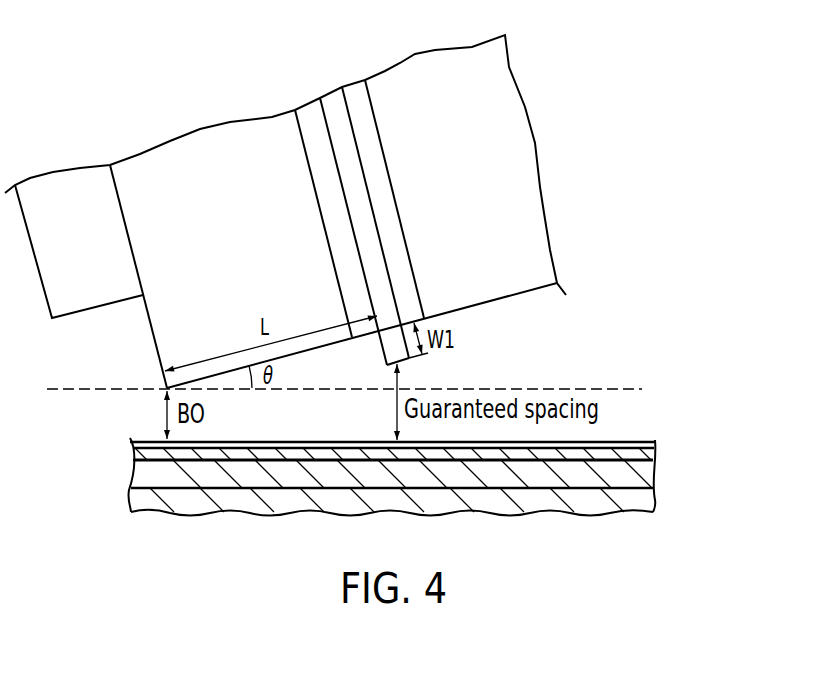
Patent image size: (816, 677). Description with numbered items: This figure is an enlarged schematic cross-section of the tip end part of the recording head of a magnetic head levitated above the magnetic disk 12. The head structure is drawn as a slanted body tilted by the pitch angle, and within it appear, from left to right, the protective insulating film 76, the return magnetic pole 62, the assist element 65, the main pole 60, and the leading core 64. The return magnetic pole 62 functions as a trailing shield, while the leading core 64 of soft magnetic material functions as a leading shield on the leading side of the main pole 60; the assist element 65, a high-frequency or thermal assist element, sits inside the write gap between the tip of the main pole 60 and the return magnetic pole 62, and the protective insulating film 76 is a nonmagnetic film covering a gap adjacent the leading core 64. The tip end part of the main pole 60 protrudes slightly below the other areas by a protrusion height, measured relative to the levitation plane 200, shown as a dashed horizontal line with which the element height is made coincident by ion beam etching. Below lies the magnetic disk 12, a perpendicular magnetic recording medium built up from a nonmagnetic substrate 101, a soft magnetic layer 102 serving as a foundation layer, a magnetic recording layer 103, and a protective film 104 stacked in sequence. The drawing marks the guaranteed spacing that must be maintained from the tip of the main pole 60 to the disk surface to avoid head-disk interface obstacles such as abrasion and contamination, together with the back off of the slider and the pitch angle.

The magnetic disk 12 is at (446, 466).
The main pole 60 is at (330, 98).
The return magnetic pole 62 is at (198, 147).
The leading core 64 is at (427, 68).
The assist element 65 is at (308, 110).
The protective insulating film 76 is at (52, 187).
The substrate 101 is at (435, 505).
The soft magnetic layer 102 is at (647, 478).
The magnetic recording layer 103 is at (655, 455).
The protective film 104 is at (653, 442).
The levitation plane 200 is at (364, 391).